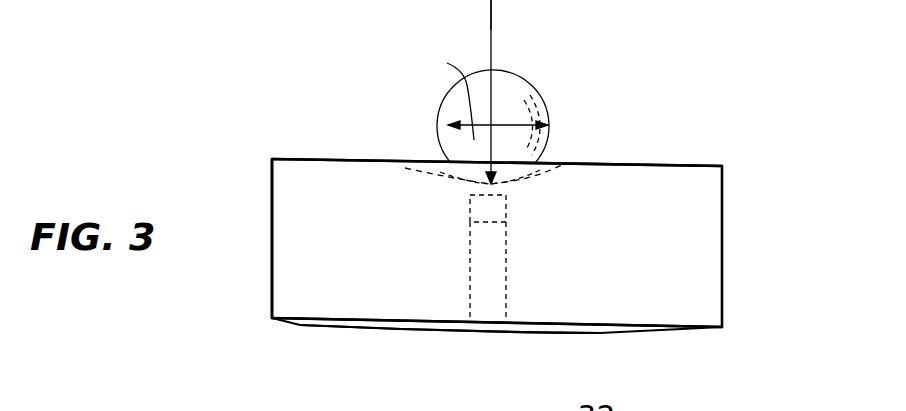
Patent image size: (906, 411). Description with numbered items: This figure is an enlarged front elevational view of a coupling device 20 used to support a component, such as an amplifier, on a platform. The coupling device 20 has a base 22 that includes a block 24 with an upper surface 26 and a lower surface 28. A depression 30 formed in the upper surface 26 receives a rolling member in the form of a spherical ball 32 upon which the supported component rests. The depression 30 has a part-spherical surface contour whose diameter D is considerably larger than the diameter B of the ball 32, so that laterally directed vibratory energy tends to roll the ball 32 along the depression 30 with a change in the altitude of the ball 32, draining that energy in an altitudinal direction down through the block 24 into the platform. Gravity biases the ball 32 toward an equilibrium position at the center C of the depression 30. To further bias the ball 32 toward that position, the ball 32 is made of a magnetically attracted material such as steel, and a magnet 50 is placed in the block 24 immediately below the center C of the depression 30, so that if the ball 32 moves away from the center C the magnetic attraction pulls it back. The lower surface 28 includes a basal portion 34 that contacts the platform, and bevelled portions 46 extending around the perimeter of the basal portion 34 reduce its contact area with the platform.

The coupling device 20 is at (272, 160).
The base 22 is at (272, 206).
The block 24 is at (290, 215).
The upper surface 26 is at (333, 159).
The lower surface 28 is at (315, 326).
The depression 30 is at (565, 163).
The ball 32 is at (515, 91).
The basal portion 34 is at (408, 328).
The bevelled portions 46 is at (290, 321).
The magnet 50 is at (506, 205).
The diameter of ball B is at (449, 97).
The center of depression C is at (490, 184).
The diameter of depression D is at (482, 7).